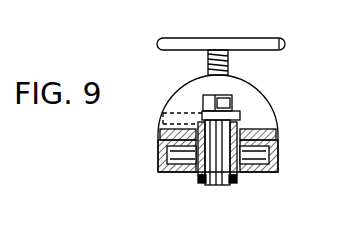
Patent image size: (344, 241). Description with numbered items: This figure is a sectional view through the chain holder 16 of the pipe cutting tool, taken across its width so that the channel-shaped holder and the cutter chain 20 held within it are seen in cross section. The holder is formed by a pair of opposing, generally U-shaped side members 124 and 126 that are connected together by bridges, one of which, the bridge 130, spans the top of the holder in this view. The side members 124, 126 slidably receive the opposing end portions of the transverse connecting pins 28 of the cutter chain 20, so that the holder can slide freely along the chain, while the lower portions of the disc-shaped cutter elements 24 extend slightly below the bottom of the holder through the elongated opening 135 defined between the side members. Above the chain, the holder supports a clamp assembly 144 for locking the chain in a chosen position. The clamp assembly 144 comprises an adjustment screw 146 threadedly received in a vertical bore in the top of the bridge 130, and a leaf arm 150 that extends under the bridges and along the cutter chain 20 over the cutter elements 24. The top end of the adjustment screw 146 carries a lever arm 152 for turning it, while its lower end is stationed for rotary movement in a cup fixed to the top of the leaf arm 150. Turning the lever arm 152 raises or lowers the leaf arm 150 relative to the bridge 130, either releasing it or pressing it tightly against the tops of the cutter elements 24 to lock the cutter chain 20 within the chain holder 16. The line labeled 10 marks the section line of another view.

The section line 10 is at (218, 37).
The clamp assembly 144 is at (191, 36).
The adjustment screw 146 is at (208, 60).
The bridge 130 is at (262, 99).
The chain holder 16 is at (282, 106).
The lever arm 152 is at (203, 110).
The leaf arm 150 is at (242, 113).
The side member 124 is at (158, 148).
The side member 126 is at (279, 147).
The connecting pins 28 is at (270, 154).
The cutter chain 20 is at (195, 182).
The cutter elements 24 is at (210, 184).
The elongated opening 135 is at (238, 180).